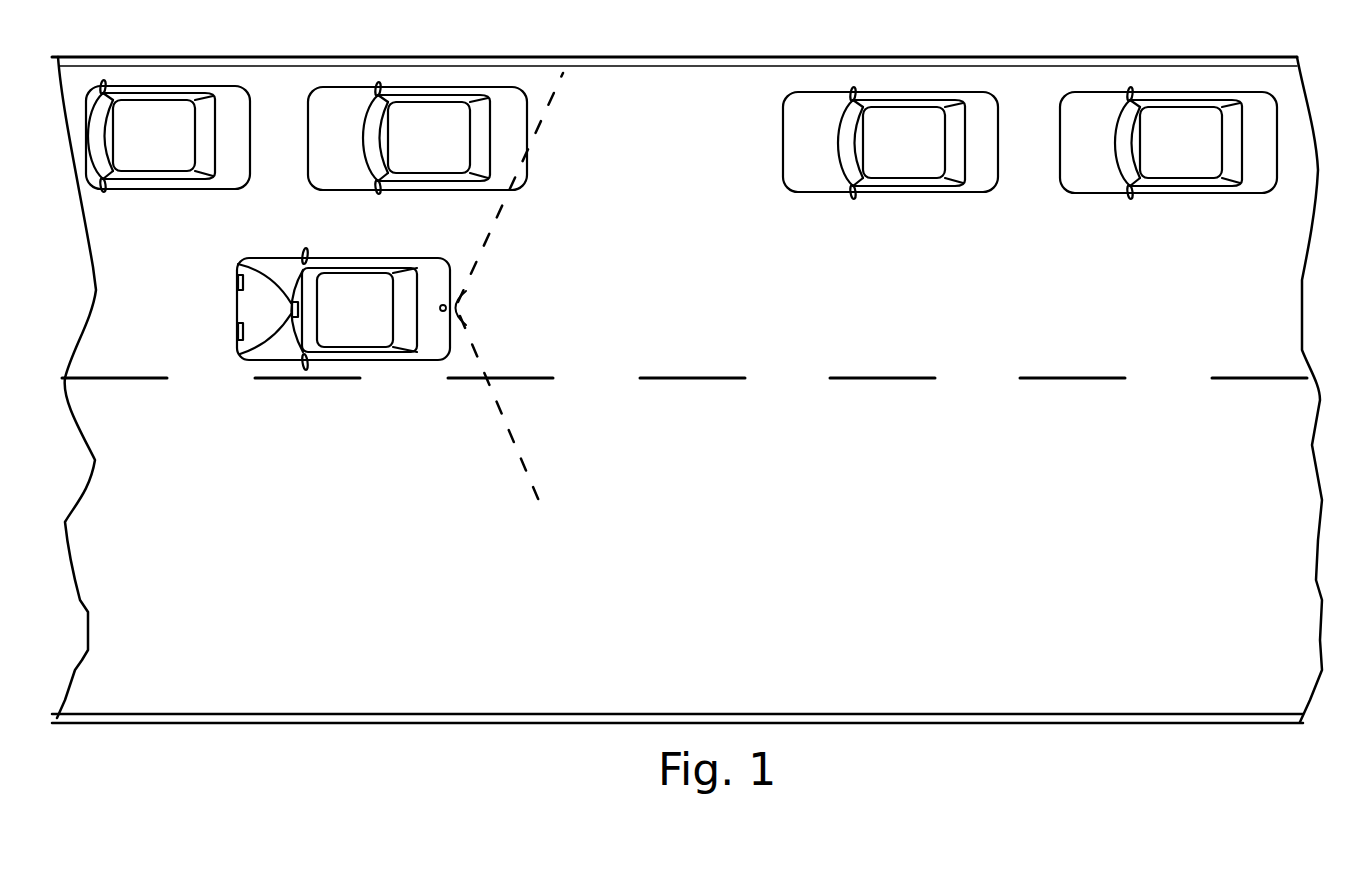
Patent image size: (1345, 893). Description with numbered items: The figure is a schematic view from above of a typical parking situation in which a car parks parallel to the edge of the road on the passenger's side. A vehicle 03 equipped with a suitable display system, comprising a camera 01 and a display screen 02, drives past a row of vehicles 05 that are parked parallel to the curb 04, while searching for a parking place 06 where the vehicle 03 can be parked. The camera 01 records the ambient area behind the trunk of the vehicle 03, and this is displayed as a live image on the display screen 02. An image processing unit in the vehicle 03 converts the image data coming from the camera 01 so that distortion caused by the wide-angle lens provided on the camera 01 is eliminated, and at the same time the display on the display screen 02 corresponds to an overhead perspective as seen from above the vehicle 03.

The camera 01 is at (457, 310).
The display screen 02 is at (296, 318).
The vehicle 03 is at (348, 361).
The curb 04 is at (670, 67).
The vehicles 05 is at (147, 187).
The parking place 06 is at (694, 211).